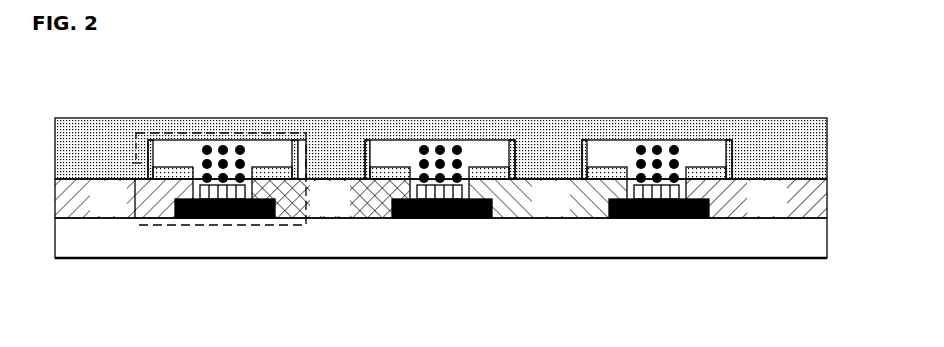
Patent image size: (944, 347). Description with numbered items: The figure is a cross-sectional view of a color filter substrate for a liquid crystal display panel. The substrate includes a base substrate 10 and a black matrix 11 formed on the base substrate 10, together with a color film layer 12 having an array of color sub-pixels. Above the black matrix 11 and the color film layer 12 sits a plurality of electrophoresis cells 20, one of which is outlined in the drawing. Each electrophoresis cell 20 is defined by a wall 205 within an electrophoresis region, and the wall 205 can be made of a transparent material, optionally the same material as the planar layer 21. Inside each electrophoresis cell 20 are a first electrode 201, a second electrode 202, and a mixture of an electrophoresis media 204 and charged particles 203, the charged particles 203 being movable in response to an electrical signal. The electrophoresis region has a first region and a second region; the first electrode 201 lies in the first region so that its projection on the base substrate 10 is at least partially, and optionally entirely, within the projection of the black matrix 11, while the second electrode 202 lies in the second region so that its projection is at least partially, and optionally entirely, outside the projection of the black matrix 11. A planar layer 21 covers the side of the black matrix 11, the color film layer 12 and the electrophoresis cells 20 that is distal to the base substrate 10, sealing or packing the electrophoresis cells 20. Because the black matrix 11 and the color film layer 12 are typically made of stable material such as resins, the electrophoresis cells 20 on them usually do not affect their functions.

The base substrate 10 is at (528, 258).
The black matrix 11 is at (640, 219).
The color film layer 12 is at (735, 219).
The electrophoresis cell 20 is at (240, 227).
The planar layer 21 is at (708, 118).
The first electrode 201 is at (230, 193).
The second electrode 202 is at (176, 173).
The charged particles 203 is at (250, 162).
The electrophoresis media 204 is at (167, 157).
The wall 205 is at (137, 160).